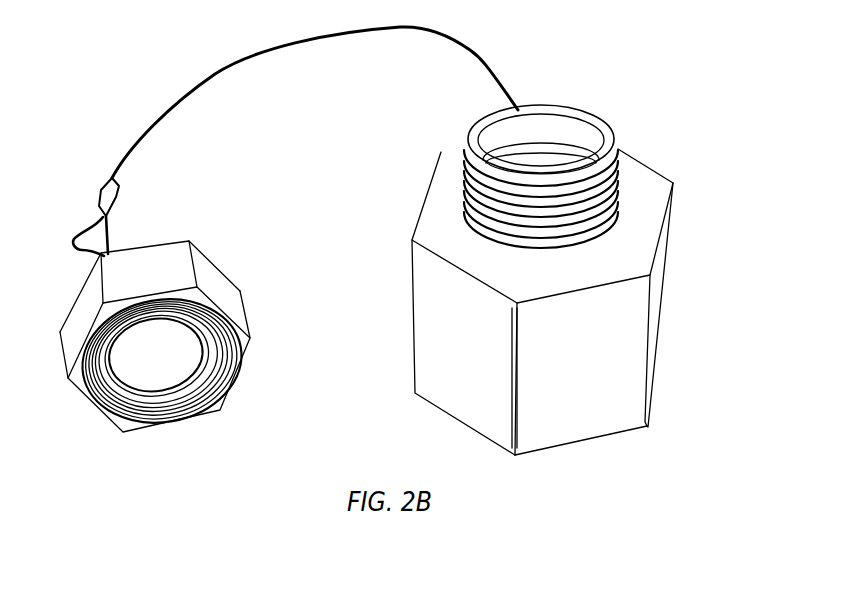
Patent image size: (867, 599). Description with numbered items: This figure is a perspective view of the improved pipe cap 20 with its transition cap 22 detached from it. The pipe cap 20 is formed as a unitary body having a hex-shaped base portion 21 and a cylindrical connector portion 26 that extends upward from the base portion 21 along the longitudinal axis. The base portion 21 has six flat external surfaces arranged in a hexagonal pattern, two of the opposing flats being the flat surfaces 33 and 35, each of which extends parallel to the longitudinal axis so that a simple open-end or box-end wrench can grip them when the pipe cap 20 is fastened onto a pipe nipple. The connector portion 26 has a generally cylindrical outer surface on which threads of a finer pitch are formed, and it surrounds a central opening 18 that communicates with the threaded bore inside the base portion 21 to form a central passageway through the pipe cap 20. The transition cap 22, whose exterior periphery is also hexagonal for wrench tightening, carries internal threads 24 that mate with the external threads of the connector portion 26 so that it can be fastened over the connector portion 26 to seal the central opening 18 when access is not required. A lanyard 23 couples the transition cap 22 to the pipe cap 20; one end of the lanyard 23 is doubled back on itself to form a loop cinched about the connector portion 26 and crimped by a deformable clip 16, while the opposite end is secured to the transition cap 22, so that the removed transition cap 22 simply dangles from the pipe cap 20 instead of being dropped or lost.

The knot / tether anchor 16 is at (102, 203).
The central opening 18 is at (584, 134).
The pipe cap 20 is at (554, 250).
The base portion 21 is at (547, 298).
The transition cap 22 is at (176, 360).
The lanyard 23 is at (263, 60).
The threads 24 is at (182, 390).
The connector portion 26 is at (467, 178).
The flat surface 33 is at (542, 226).
The flat surface 35 is at (463, 347).